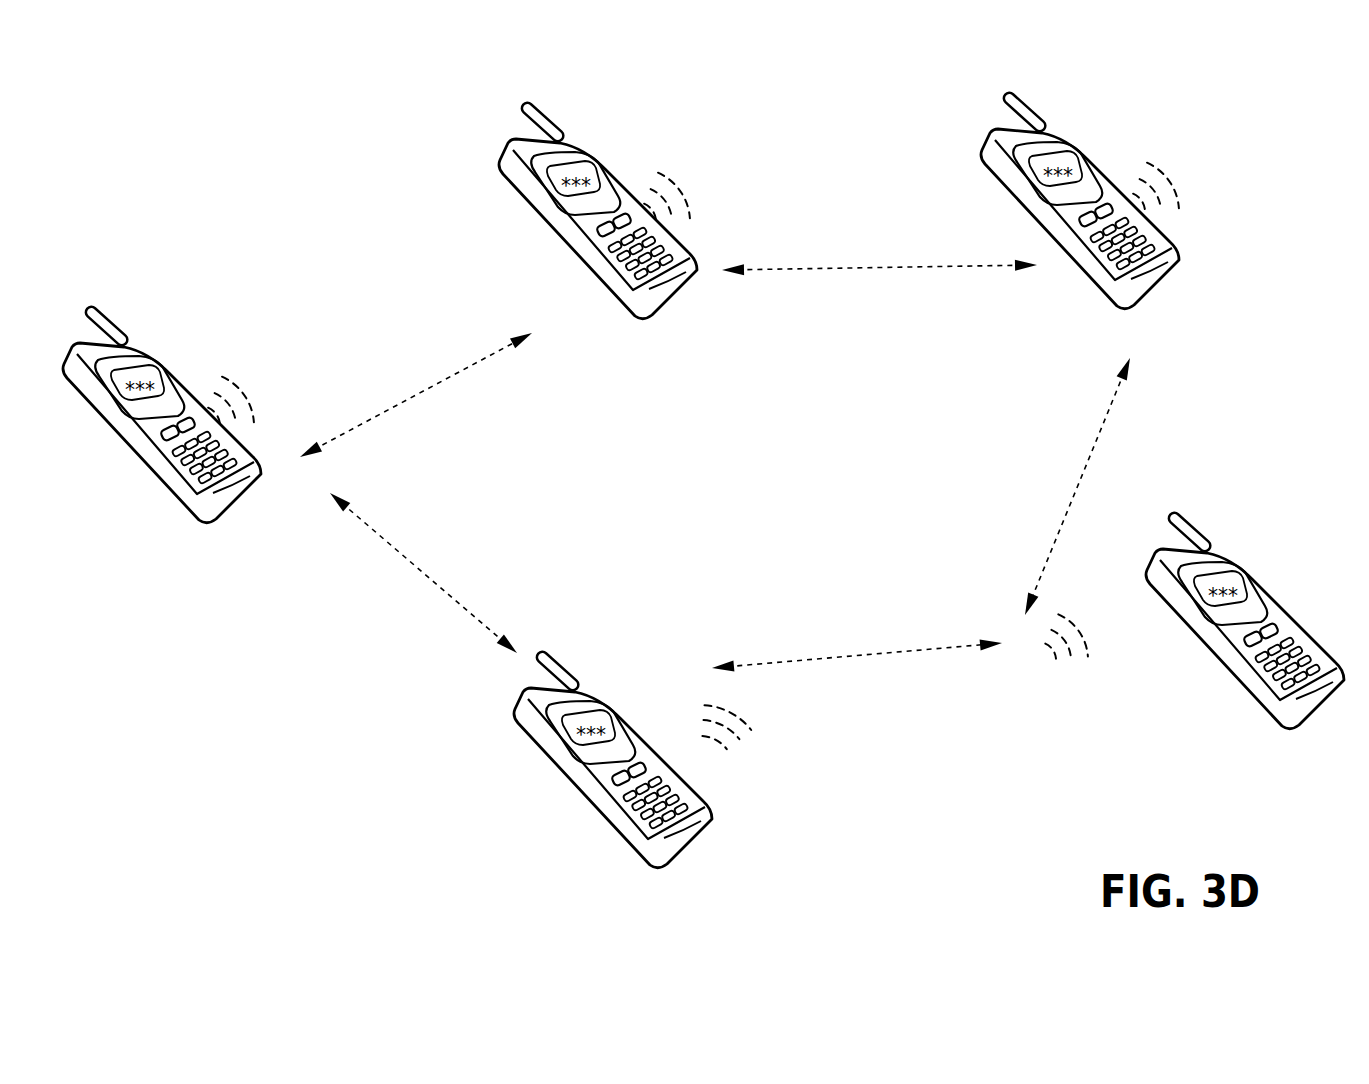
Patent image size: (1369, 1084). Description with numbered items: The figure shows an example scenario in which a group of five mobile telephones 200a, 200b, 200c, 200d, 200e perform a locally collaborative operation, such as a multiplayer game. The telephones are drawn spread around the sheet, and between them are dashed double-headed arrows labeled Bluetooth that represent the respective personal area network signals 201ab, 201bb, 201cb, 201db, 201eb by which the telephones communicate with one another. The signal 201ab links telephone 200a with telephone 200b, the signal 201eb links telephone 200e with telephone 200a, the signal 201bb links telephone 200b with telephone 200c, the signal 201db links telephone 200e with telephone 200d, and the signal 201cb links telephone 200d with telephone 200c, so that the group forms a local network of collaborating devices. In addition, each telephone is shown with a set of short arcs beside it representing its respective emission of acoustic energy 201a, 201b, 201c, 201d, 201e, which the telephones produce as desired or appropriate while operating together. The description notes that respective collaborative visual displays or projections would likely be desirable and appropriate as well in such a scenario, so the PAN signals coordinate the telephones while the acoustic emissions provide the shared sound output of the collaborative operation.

The telephone 200a is at (570, 264).
The telephone 200b is at (1157, 297).
The telephone 200c is at (1223, 680).
The telephone 200d is at (560, 790).
The telephone 200e is at (225, 510).
The emission of acoustic energy 201a is at (676, 184).
The emission of acoustic energy 201b is at (1168, 170).
The emission of acoustic energy 201c is at (1045, 650).
The emission of acoustic energy 201d is at (742, 718).
The emission of acoustic energy 201e is at (242, 390).
The PAN signal 201ab is at (892, 268).
The PAN signal 201eb is at (432, 387).
The PAN signal 201bb is at (1102, 420).
The PAN signal 201db is at (428, 577).
The PAN signal 201cb is at (880, 652).